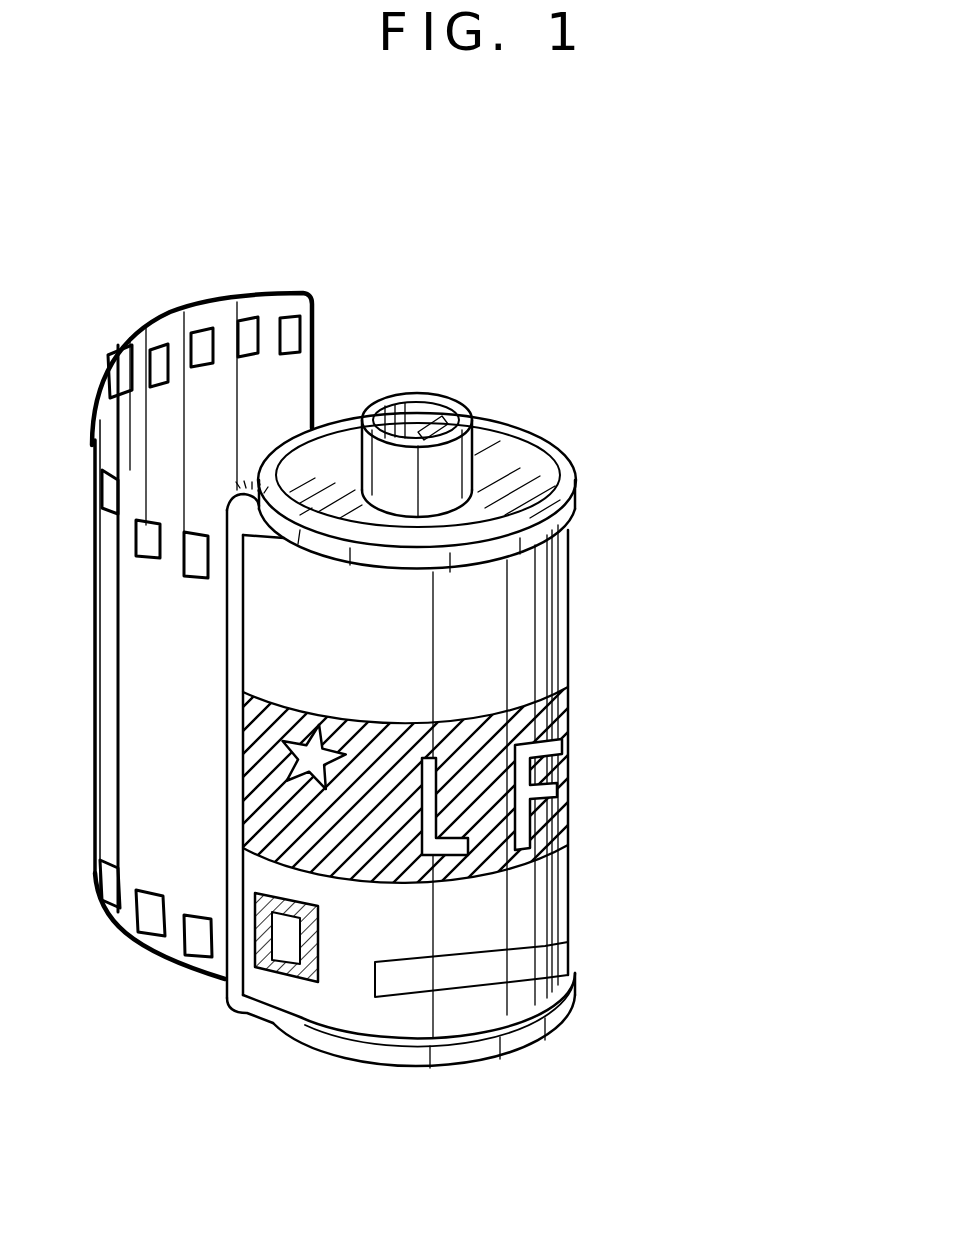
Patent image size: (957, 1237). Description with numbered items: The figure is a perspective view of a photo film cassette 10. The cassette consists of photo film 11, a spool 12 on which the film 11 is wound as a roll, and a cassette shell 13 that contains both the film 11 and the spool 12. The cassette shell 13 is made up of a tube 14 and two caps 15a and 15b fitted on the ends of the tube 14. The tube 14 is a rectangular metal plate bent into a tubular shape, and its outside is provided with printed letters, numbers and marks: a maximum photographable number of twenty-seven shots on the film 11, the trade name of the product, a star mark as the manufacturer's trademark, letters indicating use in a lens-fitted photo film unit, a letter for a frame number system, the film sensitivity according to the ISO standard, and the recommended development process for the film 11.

The photo film cassette 10 is at (472, 264).
The photo film 11 is at (249, 293).
The spool 12 is at (460, 452).
The cassette shell 13 is at (760, 450).
The tube 14 is at (573, 633).
The cap 15a is at (572, 478).
The cap 15b is at (575, 990).